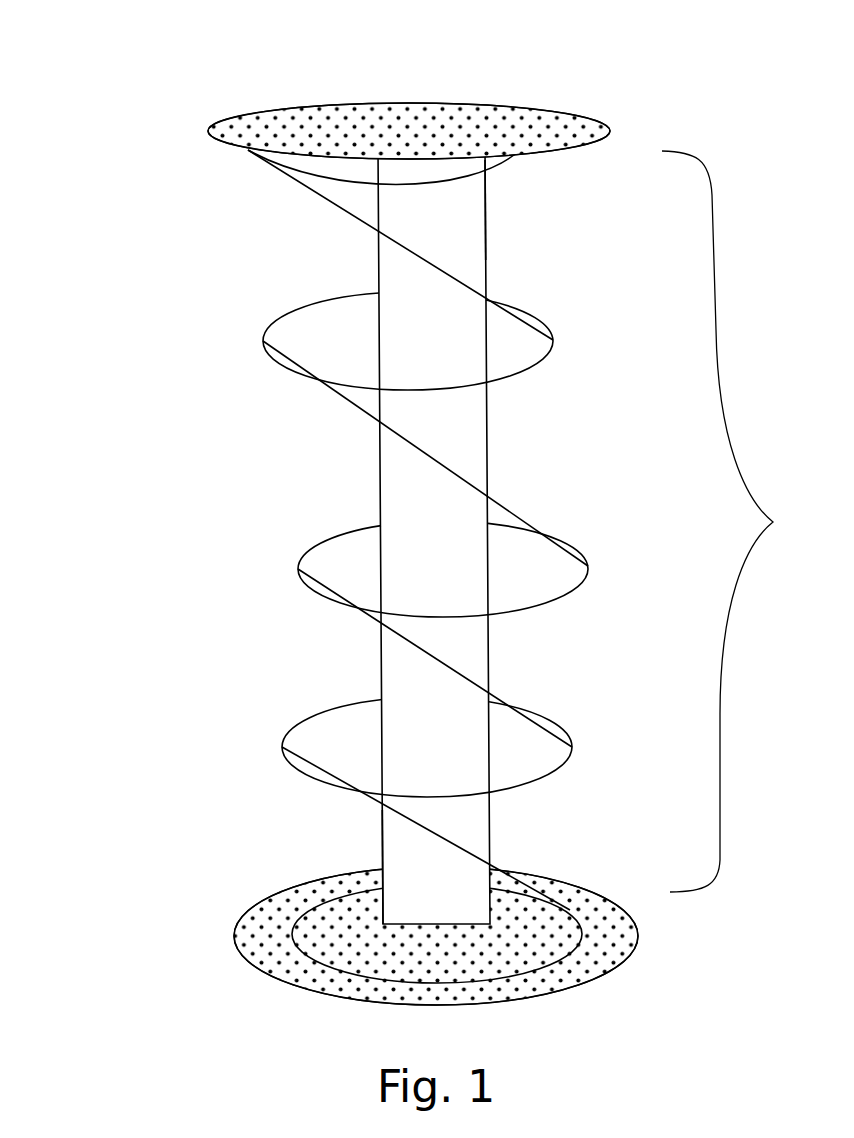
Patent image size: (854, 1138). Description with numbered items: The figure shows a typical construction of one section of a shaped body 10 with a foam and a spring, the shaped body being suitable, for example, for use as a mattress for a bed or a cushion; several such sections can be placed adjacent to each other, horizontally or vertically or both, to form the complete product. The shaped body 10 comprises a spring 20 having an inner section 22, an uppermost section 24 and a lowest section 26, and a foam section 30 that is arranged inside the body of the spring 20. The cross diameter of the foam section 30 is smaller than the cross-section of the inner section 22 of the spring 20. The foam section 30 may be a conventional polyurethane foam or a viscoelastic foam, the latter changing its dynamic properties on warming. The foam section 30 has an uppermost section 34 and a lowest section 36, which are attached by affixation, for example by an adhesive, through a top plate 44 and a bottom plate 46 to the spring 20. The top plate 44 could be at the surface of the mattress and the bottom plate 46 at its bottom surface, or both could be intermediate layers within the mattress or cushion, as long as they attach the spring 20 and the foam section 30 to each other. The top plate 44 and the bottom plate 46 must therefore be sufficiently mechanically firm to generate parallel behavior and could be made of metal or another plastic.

The shaped body 10 is at (108, 66).
The spring 20 is at (537, 530).
The inner section 22 is at (347, 560).
The uppermost section 24 is at (283, 173).
The lowest section 26 is at (585, 882).
The foam section 30 is at (381, 731).
The uppermost section 34 is at (485, 213).
The lowest section 36 is at (383, 834).
The top plate 44 is at (548, 110).
The bottom plate 46 is at (625, 940).